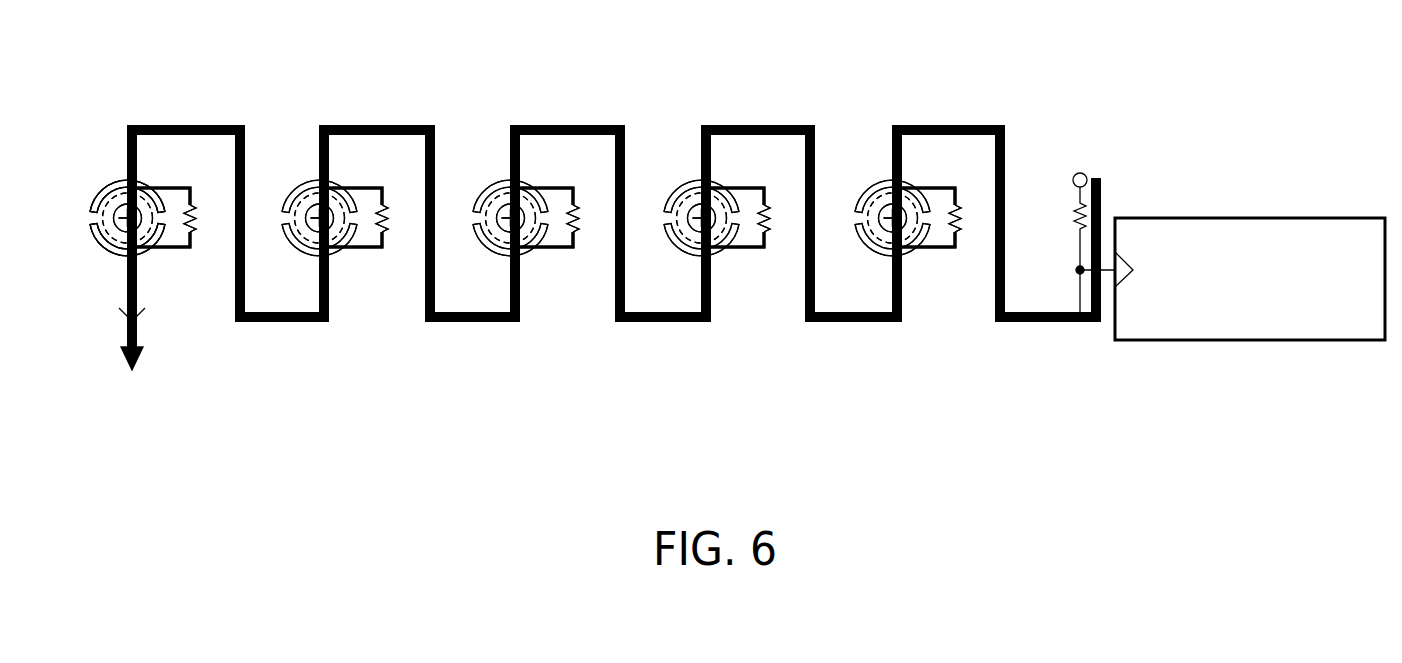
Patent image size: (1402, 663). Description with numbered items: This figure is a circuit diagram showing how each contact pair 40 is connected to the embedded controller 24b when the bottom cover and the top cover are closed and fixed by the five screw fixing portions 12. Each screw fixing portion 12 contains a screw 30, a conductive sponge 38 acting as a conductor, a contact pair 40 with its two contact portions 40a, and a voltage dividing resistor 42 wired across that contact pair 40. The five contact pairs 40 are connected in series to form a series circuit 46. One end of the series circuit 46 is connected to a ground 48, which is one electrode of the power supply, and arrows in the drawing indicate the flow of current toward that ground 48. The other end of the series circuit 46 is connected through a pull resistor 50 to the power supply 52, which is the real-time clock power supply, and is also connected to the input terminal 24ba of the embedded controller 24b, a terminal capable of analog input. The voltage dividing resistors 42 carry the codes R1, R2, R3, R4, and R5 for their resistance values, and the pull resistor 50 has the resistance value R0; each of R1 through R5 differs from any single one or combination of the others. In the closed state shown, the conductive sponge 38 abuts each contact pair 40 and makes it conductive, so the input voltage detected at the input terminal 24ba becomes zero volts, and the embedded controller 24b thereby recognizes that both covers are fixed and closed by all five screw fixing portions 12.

The screw fixing portion 12 is at (525, 155).
The embedded controller 24b is at (1247, 216).
The input terminal 24ba is at (1127, 278).
The screw 30 is at (110, 255).
The conductive sponge 38 is at (150, 184).
The contact pair 40 is at (113, 182).
The electrode portion 40a is at (93, 232).
The voltage dividing resistor 42 is at (197, 224).
The series circuit 46 is at (1010, 50).
The ground 48 is at (122, 313).
The pull resistor 50 is at (1075, 215).
The power supply 52 is at (1078, 172).
The resistance value of pull resistor R0 is at (1119, 182).
The resistance value R1 is at (974, 173).
The resistance value R2 is at (783, 173).
The resistance value R3 is at (592, 173).
The resistance value R4 is at (401, 173).
The resistance value R5 is at (209, 173).